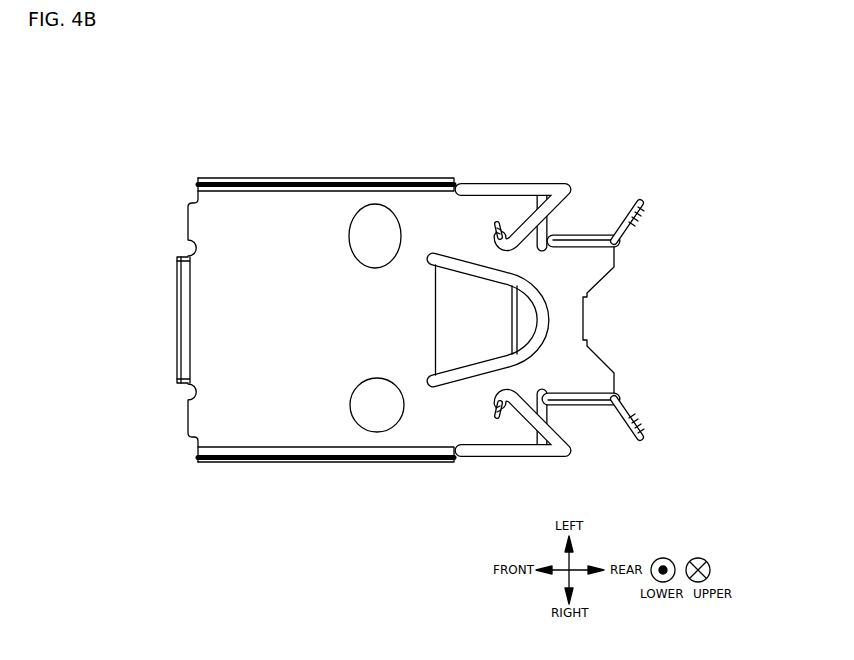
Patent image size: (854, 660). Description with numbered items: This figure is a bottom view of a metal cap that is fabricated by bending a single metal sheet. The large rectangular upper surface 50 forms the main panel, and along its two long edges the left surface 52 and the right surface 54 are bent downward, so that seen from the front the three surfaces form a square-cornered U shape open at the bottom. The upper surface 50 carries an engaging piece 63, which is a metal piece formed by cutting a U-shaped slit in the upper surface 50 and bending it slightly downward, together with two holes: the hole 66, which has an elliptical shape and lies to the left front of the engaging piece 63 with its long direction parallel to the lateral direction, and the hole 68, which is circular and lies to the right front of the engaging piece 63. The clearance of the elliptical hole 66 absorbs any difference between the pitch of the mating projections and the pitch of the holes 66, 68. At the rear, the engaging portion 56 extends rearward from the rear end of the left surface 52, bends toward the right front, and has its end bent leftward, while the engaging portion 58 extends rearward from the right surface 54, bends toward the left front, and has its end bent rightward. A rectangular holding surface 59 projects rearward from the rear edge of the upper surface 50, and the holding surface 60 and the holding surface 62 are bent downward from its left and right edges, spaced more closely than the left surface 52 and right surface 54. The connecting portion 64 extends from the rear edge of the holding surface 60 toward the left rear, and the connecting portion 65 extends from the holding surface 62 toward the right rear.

The upper surface 50 is at (225, 305).
The left surface 52 is at (318, 178).
The right surface 54 is at (318, 462).
The engaging portion 56 is at (498, 246).
The engaging portion 58 is at (498, 394).
The holding surface 59 is at (582, 322).
The holding surface 60 is at (583, 236).
The holding surface 62 is at (597, 402).
The engaging piece 63 is at (463, 318).
The connecting portion 64 is at (643, 213).
The connecting portion 65 is at (640, 423).
The hole 66 is at (370, 237).
The hole 68 is at (370, 403).